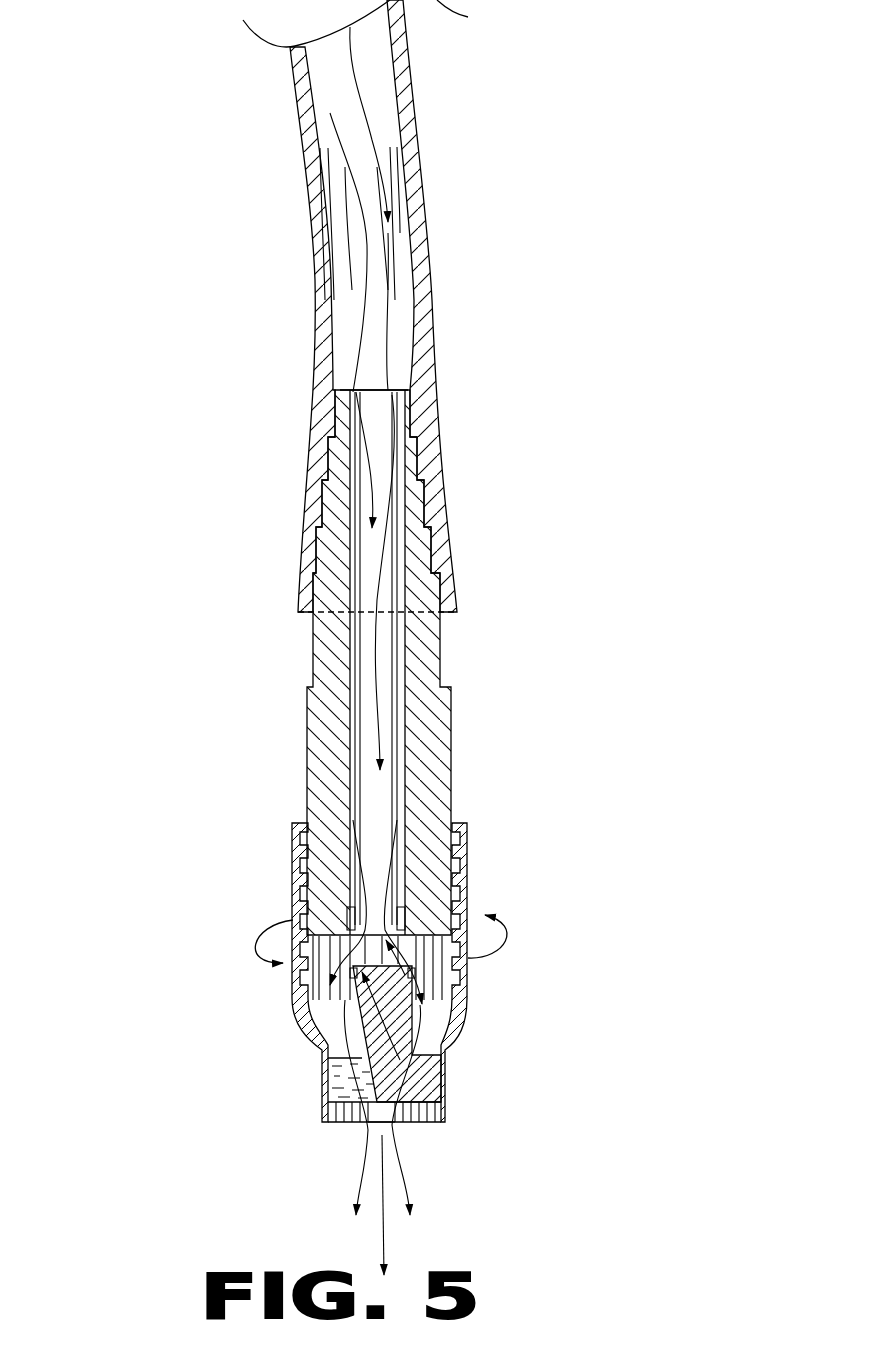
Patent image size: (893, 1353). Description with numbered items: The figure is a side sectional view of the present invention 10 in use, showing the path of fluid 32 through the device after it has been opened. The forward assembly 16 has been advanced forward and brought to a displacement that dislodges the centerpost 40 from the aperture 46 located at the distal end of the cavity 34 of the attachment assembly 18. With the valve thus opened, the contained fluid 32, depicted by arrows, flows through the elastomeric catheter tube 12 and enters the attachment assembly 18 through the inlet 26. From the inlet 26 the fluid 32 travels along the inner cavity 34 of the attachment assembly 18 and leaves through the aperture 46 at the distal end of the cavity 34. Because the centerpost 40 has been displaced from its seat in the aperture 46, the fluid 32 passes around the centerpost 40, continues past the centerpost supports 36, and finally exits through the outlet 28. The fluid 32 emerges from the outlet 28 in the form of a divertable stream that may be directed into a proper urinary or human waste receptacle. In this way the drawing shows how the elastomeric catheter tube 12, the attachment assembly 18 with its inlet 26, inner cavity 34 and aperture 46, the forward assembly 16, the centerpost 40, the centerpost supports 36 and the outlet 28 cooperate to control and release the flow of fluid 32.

The present invention 10 is at (178, 603).
The elastomeric catheter tube 12 is at (315, 318).
The fluid 32 is at (362, 212).
The inlet 26 is at (375, 388).
The inner cavity 34 is at (383, 580).
The attachment assembly 18 is at (450, 730).
The forward assembly 16 is at (468, 888).
The aperture 46 is at (430, 975).
The centerpost 40 is at (430, 1056).
The centerpost supports 36 is at (337, 1068).
The outlet 28 is at (433, 1128).